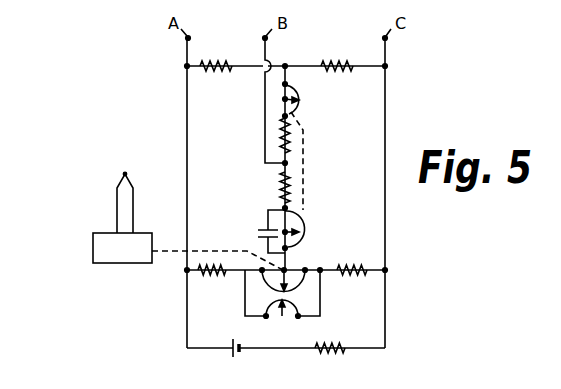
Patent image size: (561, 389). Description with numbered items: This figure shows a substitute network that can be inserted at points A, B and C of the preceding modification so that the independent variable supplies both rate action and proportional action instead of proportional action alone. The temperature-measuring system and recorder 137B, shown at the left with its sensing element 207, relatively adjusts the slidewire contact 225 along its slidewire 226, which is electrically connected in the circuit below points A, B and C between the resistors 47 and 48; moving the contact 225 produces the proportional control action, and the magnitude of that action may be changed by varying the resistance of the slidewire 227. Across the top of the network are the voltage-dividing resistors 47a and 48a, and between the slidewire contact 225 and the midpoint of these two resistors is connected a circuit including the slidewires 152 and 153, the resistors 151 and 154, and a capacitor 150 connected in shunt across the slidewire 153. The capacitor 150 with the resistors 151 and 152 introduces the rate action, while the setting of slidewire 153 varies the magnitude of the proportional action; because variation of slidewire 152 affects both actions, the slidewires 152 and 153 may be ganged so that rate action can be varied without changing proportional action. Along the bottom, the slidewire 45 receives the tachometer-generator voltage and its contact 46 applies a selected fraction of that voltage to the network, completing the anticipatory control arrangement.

The voltage-dividing resistor 47a is at (217, 62).
The voltage-dividing resistor 48a is at (332, 62).
The slidewire 152 is at (300, 104).
The resistor 151 is at (287, 152).
The resistor 154 is at (282, 192).
The capacitor 150 is at (258, 230).
The slidewire 153 is at (299, 232).
The slidewire contact 225 is at (288, 268).
The slidewire 226 is at (308, 277).
The slidewire 227 is at (298, 306).
The resistor 48 is at (356, 265).
The resistor 47 is at (218, 274).
The slidewire 45 is at (232, 341).
The contact 46 is at (340, 346).
The probe 207 is at (120, 182).
The temperature-measuring system and recorder 137B is at (121, 257).